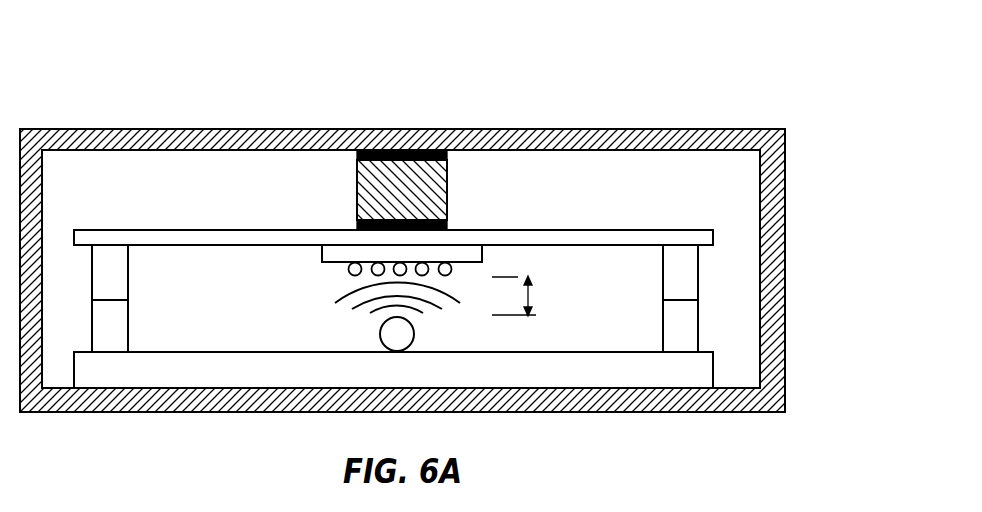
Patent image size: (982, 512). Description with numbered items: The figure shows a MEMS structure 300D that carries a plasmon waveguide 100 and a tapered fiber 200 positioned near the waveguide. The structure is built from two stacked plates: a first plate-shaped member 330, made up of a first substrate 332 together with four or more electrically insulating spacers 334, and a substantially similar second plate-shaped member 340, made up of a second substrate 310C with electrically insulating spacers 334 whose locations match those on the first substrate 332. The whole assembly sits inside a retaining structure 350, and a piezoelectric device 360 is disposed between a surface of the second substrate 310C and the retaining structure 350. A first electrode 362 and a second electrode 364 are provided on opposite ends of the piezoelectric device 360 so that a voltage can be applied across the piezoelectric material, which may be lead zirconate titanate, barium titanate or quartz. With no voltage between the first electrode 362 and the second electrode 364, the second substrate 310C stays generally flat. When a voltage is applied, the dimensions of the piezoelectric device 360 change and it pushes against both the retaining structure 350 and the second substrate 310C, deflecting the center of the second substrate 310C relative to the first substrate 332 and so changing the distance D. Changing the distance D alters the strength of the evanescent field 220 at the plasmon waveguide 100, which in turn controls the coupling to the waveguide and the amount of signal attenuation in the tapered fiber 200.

The MEMS structure 300D is at (156, 86).
The retaining structure 350 is at (747, 128).
The piezoelectric device 360 is at (433, 190).
The first electrode 362 is at (358, 150).
The second electrode 364 is at (358, 220).
The second substrate 310C is at (714, 236).
The electrically insulating spacers 334 is at (698, 274).
The first substrate 332 is at (713, 366).
The second plate-shaped member 340 is at (850, 251).
The first plate-shaped member 330 is at (843, 325).
The plasmon waveguide 100 is at (322, 257).
The evanescent field 220 is at (458, 303).
The tapered fiber 200 is at (414, 334).
The distance D is at (533, 296).